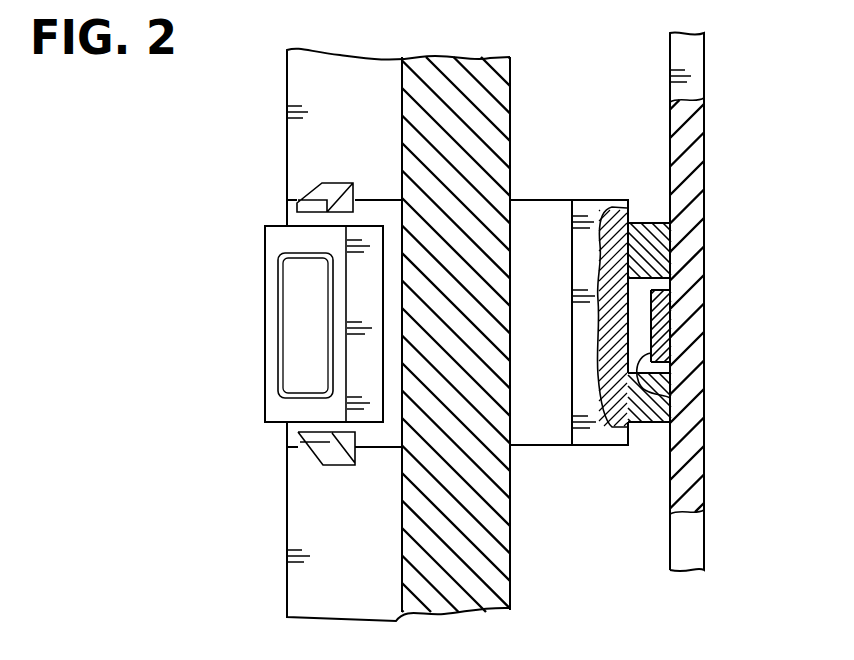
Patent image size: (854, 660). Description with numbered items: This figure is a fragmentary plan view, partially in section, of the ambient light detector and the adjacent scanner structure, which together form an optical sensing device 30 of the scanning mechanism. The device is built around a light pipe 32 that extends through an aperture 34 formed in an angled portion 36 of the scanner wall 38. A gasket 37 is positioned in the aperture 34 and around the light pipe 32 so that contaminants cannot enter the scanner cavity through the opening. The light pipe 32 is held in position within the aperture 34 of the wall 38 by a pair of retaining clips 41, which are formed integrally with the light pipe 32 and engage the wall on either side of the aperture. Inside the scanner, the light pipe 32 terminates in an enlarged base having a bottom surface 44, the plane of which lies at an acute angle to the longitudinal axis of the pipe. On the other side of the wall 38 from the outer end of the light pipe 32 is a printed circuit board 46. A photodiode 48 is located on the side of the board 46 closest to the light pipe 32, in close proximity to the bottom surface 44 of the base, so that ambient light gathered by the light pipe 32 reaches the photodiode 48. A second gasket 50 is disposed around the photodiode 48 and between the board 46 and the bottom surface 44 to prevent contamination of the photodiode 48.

The optical sensing device 30 is at (208, 379).
The light pipe 32 is at (533, 200).
The aperture 34 is at (373, 447).
The angled portion 36 is at (292, 72).
The gasket 37 is at (372, 197).
The scanner wall 38 is at (290, 594).
The retaining clips 41 is at (320, 187).
The bottom surface 44 is at (628, 206).
The printed circuit board 46 is at (706, 300).
The photodiode 48 is at (682, 393).
The gasket 50 is at (650, 423).